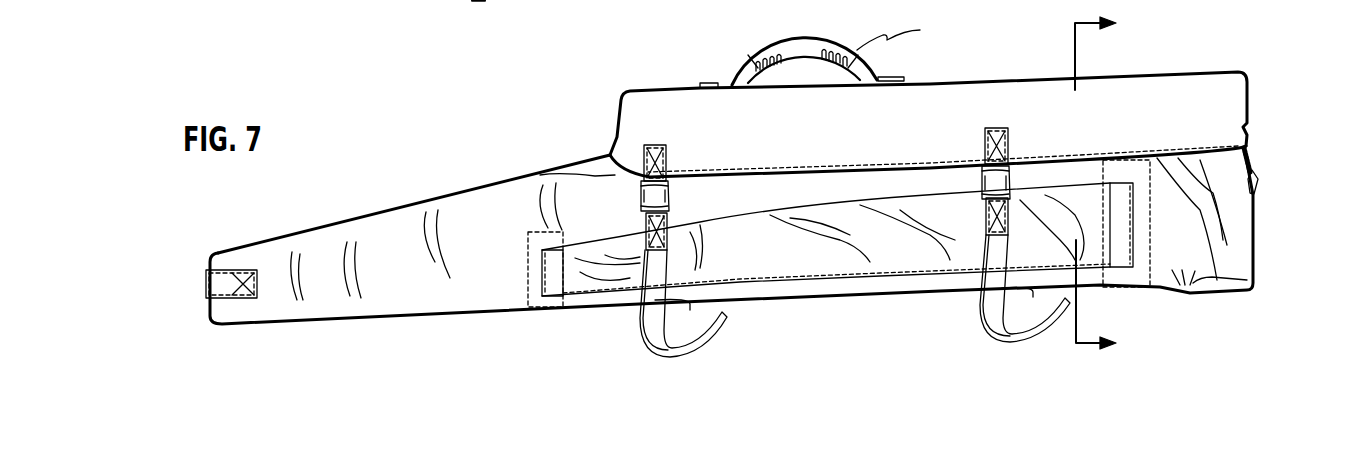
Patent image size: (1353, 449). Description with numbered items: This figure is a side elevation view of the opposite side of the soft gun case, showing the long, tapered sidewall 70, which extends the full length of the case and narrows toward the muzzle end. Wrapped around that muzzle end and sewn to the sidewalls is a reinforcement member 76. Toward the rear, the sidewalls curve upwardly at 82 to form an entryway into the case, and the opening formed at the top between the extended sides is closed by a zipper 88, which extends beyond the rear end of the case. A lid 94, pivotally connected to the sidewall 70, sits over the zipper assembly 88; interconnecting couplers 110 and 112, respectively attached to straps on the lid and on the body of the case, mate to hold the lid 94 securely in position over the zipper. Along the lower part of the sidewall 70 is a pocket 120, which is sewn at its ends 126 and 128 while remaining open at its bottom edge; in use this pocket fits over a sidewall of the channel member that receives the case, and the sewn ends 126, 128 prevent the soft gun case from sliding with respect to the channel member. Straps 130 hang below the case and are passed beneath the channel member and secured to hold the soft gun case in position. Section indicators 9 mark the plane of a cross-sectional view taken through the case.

The section line for FIG. 9 is at (1108, 185).
The sidewall 70 is at (501, 246).
The reinforcement member 76 is at (225, 284).
The upwardly curved portion of the sidewalls 82 is at (1255, 232).
The zipper 88 is at (1250, 157).
The lid 94 is at (867, 143).
The interconnecting coupler 110 is at (668, 167).
The interconnecting coupler 112 is at (669, 198).
The pocket 120 is at (797, 263).
The sewn end of pocket 126 is at (548, 276).
The sewn end of pocket 128 is at (1125, 243).
The strap 130 is at (642, 326).